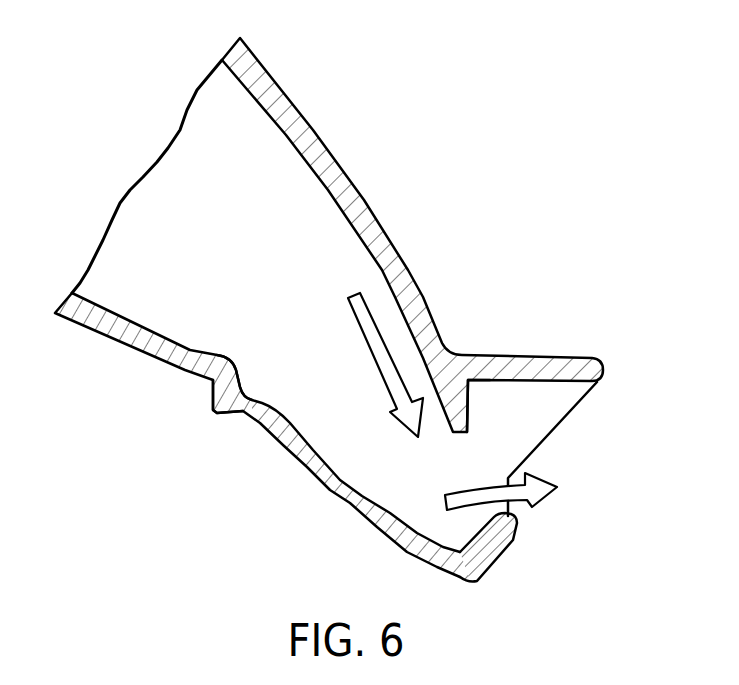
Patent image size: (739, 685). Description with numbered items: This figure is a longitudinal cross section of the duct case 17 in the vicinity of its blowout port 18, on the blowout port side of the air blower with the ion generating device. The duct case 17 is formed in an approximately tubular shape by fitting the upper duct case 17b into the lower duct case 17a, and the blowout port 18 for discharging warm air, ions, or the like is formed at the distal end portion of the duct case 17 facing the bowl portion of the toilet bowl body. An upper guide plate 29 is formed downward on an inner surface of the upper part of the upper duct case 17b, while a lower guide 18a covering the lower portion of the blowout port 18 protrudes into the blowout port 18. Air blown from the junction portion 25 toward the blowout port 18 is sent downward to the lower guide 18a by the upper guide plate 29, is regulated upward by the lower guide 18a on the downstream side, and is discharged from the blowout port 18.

The duct case 17 is at (337, 229).
The lower duct case 17a is at (227, 414).
The upper duct case 17b is at (293, 112).
The blowout port 18 is at (562, 425).
The lower guide 18a is at (500, 549).
The junction portion 25 is at (262, 437).
The upper guide plate 29 is at (467, 406).